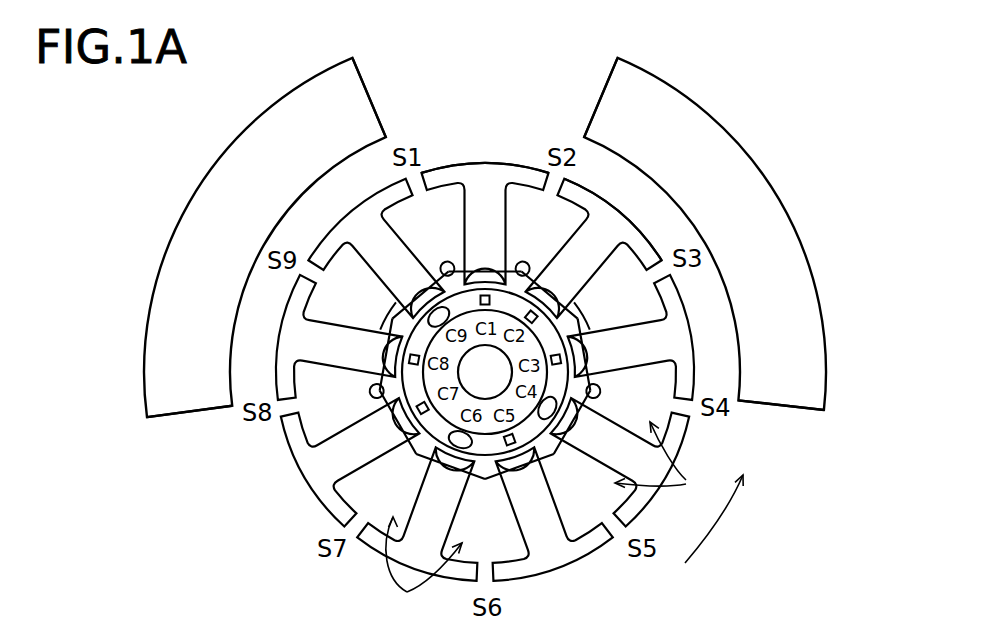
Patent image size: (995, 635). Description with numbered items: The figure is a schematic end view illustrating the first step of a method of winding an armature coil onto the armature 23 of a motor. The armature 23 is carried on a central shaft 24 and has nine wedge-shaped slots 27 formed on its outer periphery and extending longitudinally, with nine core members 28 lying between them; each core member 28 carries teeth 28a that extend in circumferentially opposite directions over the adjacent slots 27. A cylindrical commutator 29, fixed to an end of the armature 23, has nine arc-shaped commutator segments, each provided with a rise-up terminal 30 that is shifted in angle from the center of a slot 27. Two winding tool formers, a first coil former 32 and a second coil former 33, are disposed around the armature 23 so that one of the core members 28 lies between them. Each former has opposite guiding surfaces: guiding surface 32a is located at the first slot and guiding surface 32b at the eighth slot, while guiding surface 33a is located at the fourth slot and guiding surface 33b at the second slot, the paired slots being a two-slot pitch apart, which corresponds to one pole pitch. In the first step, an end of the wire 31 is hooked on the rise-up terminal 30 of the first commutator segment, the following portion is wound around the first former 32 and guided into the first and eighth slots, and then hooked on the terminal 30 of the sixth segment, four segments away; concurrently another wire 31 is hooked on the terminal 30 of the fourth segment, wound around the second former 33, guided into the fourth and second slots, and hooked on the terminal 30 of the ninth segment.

The armature 23 is at (697, 432).
The shaft 24 is at (496, 364).
The slots 27 is at (551, 522).
The core members 28 is at (485, 172).
The teeth 28a is at (434, 166).
The commutator 29 is at (542, 316).
The rise-up terminal 30 is at (407, 359).
The wire 31 is at (388, 318).
The first coil former 32 is at (356, 62).
The guiding surface 32a is at (368, 90).
The guiding surface 32b is at (180, 418).
The second coil former 33 is at (612, 62).
The guiding surface 33a is at (806, 412).
The guiding surface 33b is at (602, 90).